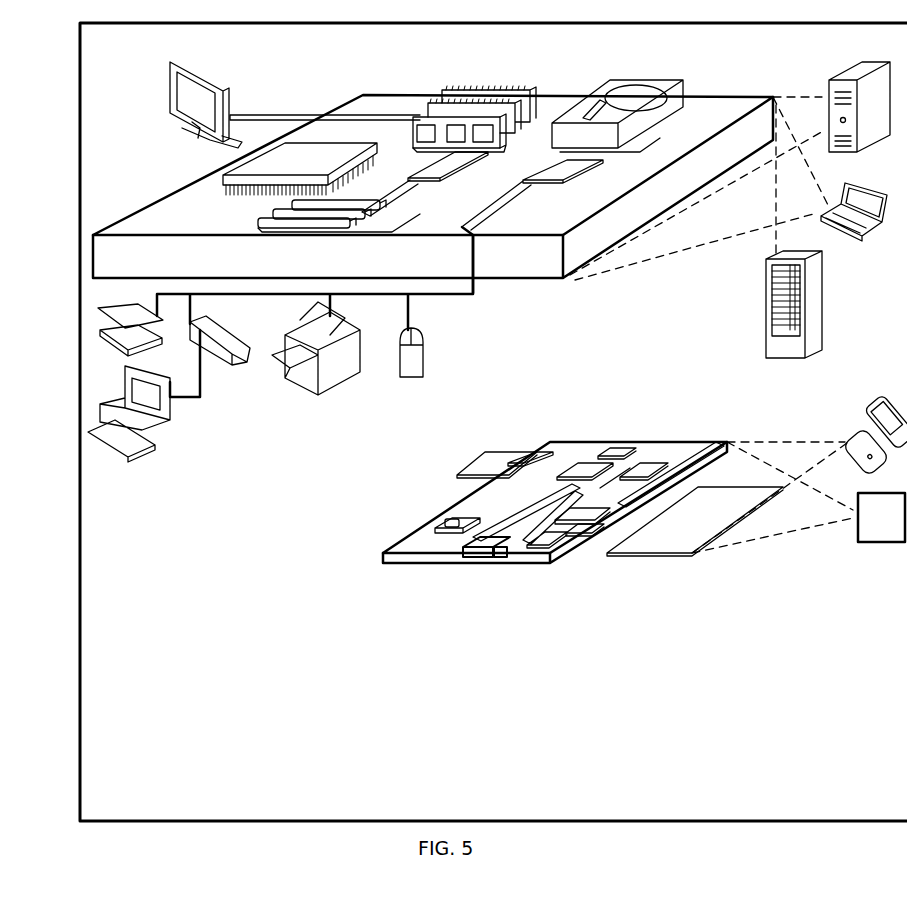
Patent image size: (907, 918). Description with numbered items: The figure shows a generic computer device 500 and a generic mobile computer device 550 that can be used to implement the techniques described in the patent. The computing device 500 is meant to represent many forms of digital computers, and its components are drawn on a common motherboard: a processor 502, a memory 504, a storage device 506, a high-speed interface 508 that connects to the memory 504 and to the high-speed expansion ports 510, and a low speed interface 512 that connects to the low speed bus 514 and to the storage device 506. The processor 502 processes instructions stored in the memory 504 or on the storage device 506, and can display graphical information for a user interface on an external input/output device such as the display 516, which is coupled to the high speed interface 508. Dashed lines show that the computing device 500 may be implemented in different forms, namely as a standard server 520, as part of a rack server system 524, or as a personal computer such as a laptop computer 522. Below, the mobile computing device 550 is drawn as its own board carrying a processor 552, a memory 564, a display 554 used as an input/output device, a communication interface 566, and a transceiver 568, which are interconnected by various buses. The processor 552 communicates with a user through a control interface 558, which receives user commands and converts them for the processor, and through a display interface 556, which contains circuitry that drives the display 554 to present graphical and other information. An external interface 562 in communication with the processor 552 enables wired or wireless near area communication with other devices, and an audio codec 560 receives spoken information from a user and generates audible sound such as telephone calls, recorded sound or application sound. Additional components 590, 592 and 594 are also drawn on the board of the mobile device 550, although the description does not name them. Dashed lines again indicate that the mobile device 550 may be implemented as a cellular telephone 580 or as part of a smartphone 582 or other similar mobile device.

The computing device 500 is at (307, 72).
The processor 502 is at (222, 178).
The memory 504 is at (457, 87).
The storage device 506 is at (613, 86).
The high-speed interface 508 is at (407, 148).
The high-speed expansion ports 510 is at (273, 213).
The low speed interface 512 is at (565, 170).
The low speed bus 514 is at (478, 238).
The display 516 is at (168, 63).
The standard server 520 is at (828, 80).
The laptop computer 522 is at (847, 184).
The rack server system 524 is at (765, 324).
The mobile computer device 550 is at (536, 420).
The processor 552 is at (507, 553).
The display 554 is at (692, 554).
The display interface 556 is at (560, 548).
The control interface 558 is at (593, 546).
The audio codec 560 is at (590, 534).
The external interface 562 is at (490, 549).
The memory 564 is at (438, 527).
The communication interface 566 is at (583, 466).
The transceiver 568 is at (640, 470).
The cellular telephone 580 is at (887, 400).
The smartphone 582 is at (865, 494).
The module 590 is at (617, 443).
The module 592 is at (528, 452).
The module 594 is at (484, 452).